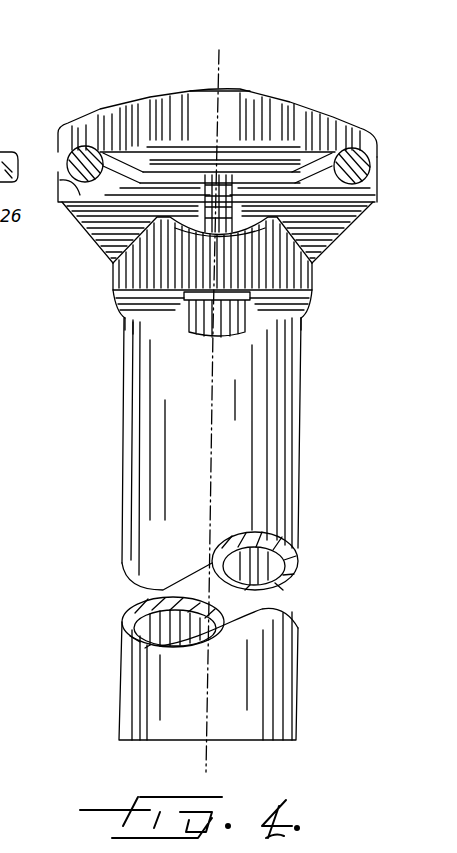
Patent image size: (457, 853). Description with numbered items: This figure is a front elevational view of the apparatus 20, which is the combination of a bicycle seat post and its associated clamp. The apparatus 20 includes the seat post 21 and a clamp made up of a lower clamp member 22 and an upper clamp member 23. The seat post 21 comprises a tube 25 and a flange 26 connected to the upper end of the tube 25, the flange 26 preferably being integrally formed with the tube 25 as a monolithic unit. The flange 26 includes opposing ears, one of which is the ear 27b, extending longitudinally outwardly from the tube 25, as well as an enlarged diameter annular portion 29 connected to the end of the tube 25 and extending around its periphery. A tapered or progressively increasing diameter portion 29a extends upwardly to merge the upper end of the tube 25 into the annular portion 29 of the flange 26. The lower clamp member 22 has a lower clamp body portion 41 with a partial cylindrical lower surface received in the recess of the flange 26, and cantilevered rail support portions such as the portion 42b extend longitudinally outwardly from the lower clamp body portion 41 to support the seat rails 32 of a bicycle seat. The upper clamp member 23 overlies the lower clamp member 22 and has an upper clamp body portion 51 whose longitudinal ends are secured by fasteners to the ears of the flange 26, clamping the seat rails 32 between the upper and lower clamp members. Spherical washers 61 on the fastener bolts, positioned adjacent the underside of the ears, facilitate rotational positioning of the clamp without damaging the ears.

The apparatus 20 is at (290, 78).
The seat post 21 is at (196, 529).
The lower clamp member 22 is at (362, 242).
The upper clamp member 23 is at (92, 110).
The tube 25 is at (298, 432).
The flange 26 is at (330, 276).
The ear 27b is at (135, 318).
The enlarged diameter annular portion 29 is at (113, 284).
The tapered or progressively increasing diameter portion 29a is at (125, 302).
The seat rails 32 is at (64, 156).
The lower clamp body portion 41 is at (300, 205).
The cantilevered rail support portion 42b is at (78, 195).
The upper clamp body portion 51 is at (197, 90).
The spherical washer 61 is at (315, 290).